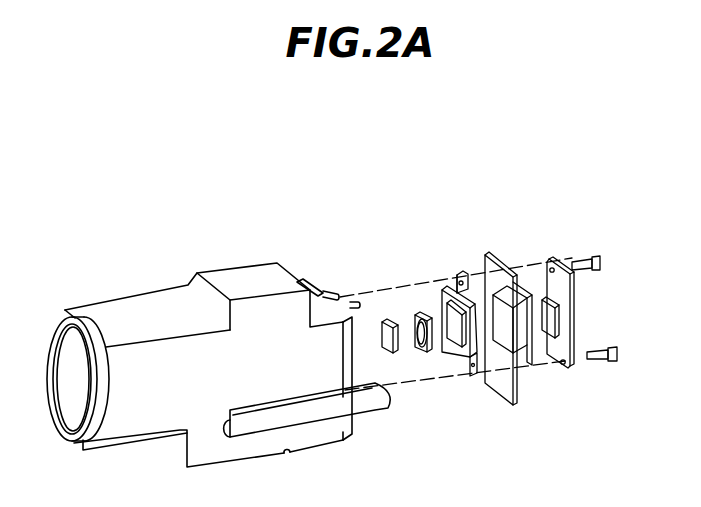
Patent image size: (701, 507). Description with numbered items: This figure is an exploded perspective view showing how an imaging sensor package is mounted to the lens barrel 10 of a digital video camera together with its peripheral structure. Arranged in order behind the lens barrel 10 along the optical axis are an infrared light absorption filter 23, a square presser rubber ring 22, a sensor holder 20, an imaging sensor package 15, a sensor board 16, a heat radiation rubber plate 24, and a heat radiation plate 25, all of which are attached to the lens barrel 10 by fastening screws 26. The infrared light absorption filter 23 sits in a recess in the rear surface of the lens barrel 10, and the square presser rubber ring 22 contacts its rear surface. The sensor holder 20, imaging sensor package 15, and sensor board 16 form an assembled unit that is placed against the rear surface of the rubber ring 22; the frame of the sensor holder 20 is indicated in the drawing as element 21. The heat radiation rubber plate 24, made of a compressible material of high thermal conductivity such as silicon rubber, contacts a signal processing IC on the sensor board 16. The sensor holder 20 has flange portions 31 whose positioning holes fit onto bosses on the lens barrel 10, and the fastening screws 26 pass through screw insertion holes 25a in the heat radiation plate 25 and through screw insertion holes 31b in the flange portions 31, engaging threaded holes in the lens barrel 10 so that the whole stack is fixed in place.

The lens barrel 10 is at (208, 260).
The sensor holder 20 is at (448, 307).
The holder frame 21 is at (442, 305).
The square presser rubber ring 22 is at (412, 316).
The infrared light absorption filter 23 is at (380, 325).
The heat radiation rubber plate 24 is at (543, 318).
The heat radiation plate 25 is at (586, 319).
The screw insertion holes 25a is at (554, 268).
The fastening screws 26 is at (586, 270).
The imaging sensor package 15 is at (487, 253).
The sensor board 16 is at (499, 272).
The flange portions 31 is at (463, 272).
The screw insertion holes 31b is at (458, 273).